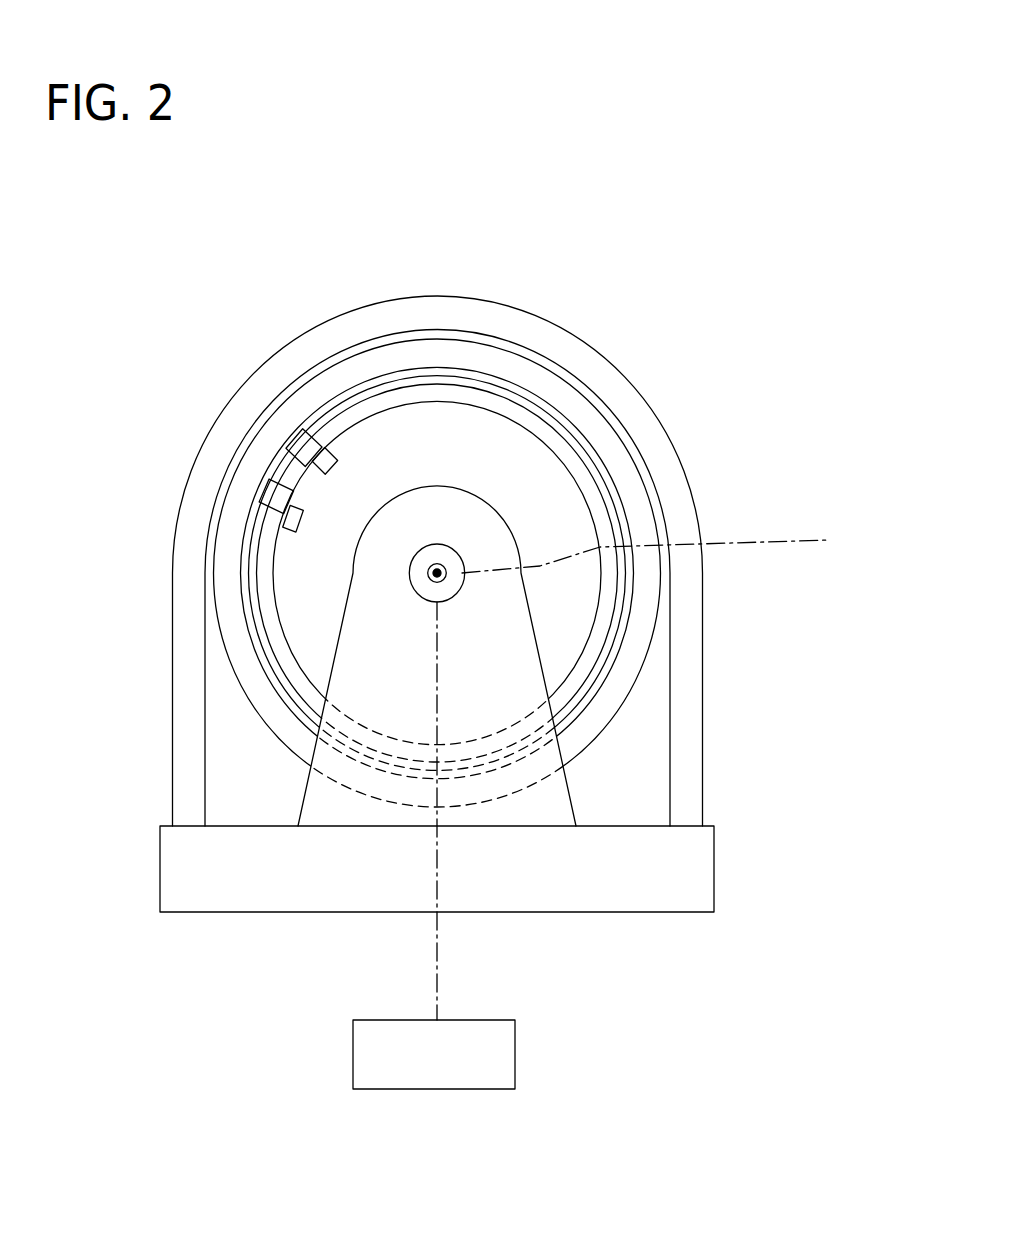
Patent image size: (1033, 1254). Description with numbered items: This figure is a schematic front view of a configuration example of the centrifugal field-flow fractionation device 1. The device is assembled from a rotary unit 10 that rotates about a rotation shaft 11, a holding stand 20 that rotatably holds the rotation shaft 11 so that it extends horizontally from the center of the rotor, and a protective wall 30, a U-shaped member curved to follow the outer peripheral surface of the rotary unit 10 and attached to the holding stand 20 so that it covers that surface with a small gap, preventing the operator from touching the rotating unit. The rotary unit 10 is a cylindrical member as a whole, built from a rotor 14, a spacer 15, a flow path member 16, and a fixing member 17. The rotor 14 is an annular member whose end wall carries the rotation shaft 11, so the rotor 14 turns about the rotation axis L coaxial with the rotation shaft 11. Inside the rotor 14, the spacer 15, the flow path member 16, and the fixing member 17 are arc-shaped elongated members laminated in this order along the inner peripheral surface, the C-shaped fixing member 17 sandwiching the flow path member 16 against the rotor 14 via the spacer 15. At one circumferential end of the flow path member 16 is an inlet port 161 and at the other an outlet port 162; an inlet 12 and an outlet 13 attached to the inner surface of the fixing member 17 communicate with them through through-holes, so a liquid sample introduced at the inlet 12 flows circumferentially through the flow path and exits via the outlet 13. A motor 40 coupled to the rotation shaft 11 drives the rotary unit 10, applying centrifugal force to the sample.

The centrifugal field-flow fractionation device 1 is at (523, 265).
The rotary unit 10 is at (393, 345).
The rotation shaft 11 is at (409, 573).
The inlet 12 is at (287, 524).
The outlet 13 is at (320, 450).
The rotor 14 is at (648, 508).
The spacer 15 is at (610, 477).
The flow path member 16 is at (585, 453).
The fixing member 17 is at (545, 427).
The inlet port 161 is at (262, 503).
The outlet port 162 is at (297, 447).
The holding stand 20 is at (665, 912).
The protective wall 30 is at (553, 342).
The motor 40 is at (353, 1052).
The rotation axis L is at (657, 554).